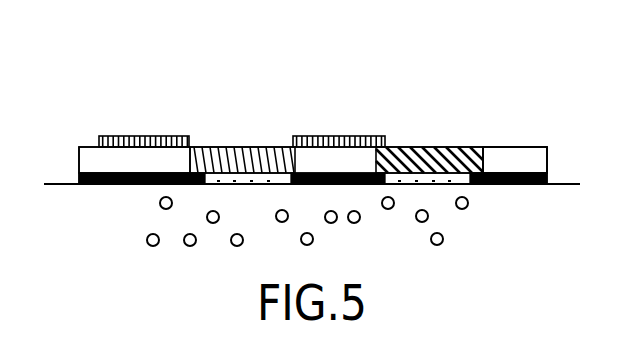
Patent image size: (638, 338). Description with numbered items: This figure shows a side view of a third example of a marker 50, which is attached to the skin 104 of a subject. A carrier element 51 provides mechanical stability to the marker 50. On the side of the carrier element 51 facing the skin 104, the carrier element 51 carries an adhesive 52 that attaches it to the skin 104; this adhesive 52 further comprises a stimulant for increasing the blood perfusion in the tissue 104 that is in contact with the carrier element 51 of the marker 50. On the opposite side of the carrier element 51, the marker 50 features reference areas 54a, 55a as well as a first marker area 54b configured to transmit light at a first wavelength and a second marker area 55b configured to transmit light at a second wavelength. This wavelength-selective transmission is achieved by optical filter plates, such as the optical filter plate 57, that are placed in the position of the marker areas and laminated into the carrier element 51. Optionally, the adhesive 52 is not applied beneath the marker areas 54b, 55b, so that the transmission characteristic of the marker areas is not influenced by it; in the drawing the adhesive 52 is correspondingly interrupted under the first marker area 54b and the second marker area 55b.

The marker 50 is at (81, 103).
The carrier element 51 is at (93, 153).
The adhesive 52 is at (117, 184).
The reference area 54a is at (138, 136).
The first marker area 54b is at (224, 98).
The reference area 55a is at (338, 134).
The second marker area 55b is at (424, 98).
The optical filter plate 57 is at (499, 132).
The skin 104 is at (64, 184).